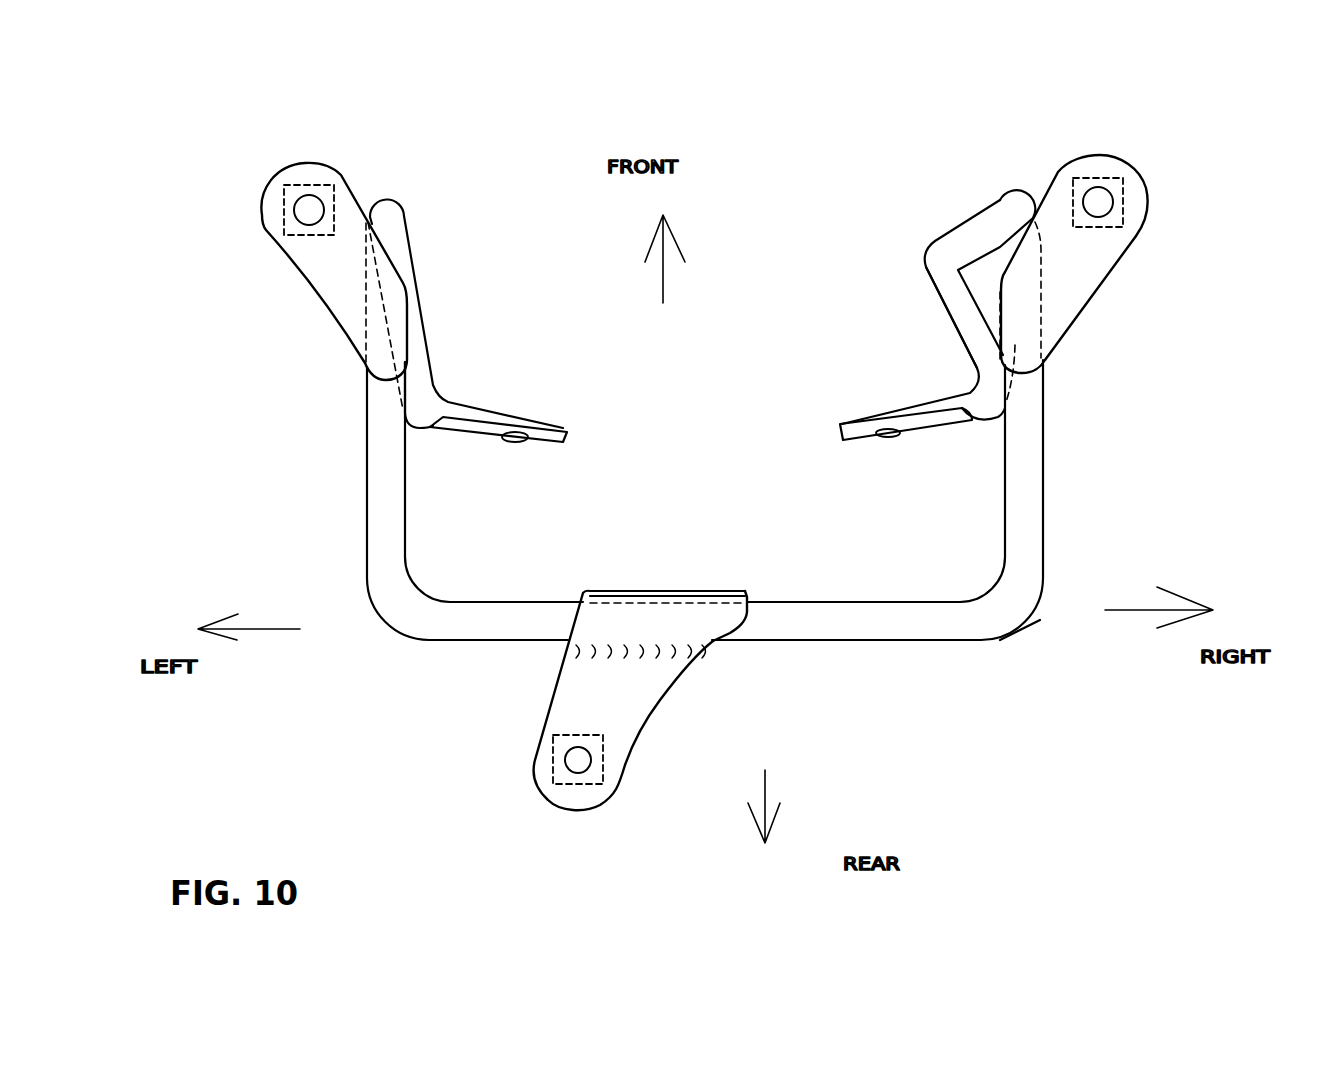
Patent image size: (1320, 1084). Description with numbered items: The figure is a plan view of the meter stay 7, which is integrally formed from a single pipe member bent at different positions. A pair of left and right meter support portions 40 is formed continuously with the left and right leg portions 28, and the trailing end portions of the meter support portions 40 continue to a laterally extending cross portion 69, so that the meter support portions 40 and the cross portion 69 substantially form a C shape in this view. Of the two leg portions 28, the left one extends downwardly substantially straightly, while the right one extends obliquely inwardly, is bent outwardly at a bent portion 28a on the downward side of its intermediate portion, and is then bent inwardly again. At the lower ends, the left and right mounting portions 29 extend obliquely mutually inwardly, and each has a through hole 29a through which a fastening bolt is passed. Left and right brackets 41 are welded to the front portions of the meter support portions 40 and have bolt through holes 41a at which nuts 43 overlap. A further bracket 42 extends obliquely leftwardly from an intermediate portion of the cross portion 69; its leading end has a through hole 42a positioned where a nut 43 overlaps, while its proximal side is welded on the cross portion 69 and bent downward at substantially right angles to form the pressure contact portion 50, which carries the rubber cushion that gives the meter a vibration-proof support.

The meter stay 7 is at (1045, 660).
The leg portion 28 is at (404, 243).
The bent portion 28a is at (937, 263).
The mounting portion 29 is at (497, 418).
The through hole 29a is at (517, 443).
The meter support portion 40 is at (372, 497).
The bracket 41 is at (332, 295).
The bolt through hole 41a is at (309, 207).
The bracket 42 is at (633, 693).
The through hole 42a is at (583, 763).
The nut 43 is at (282, 207).
The pressure contact portion 50 is at (725, 590).
The cross portion 69 is at (836, 632).